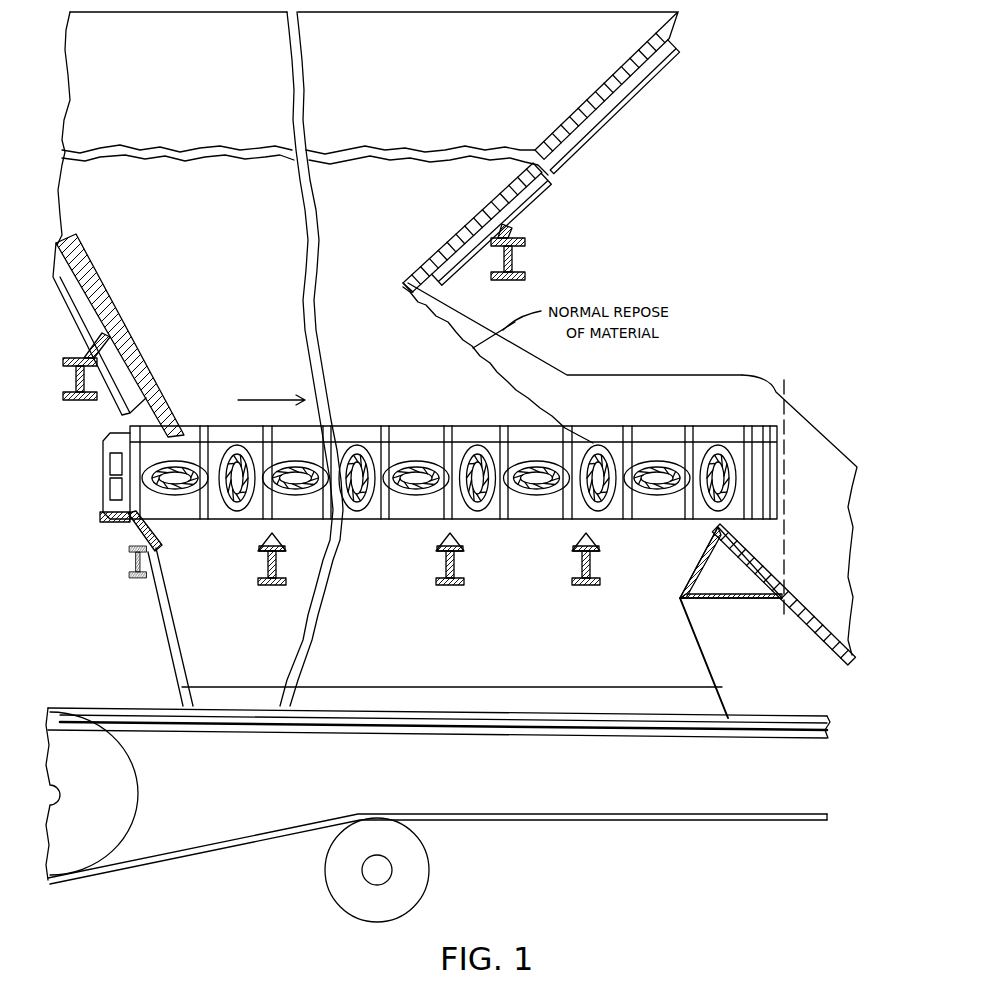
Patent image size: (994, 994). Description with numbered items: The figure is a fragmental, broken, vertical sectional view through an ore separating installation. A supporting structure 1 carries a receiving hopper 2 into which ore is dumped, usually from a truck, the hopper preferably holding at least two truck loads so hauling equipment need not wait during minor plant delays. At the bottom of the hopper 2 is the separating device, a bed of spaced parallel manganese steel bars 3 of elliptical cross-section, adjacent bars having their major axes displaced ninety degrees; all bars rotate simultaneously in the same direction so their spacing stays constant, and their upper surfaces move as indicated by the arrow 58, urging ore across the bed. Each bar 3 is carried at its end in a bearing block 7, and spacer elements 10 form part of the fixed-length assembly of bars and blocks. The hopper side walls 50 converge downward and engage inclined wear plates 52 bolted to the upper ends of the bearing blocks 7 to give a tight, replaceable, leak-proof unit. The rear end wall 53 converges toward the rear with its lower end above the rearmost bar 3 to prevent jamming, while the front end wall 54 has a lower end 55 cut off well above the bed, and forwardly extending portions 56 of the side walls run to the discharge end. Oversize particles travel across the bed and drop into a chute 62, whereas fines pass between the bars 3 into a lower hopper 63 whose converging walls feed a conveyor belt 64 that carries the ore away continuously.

The supporting structure 1 is at (523, 262).
The receiving hopper 2 is at (457, 359).
The bars 3 is at (181, 466).
The bearing block 7 is at (650, 458).
The spacer elements 10 is at (447, 435).
The side walls 50 is at (474, 336).
The wear plates 52 is at (347, 437).
The rear end wall 53 is at (93, 288).
The front end wall 54 is at (463, 218).
The lower end 55 is at (404, 289).
The forwardly extending portions 56 is at (467, 320).
The arrow 58 is at (271, 387).
The chute 62 is at (768, 594).
The hopper 63 is at (428, 614).
The conveyor belt 64 is at (518, 724).